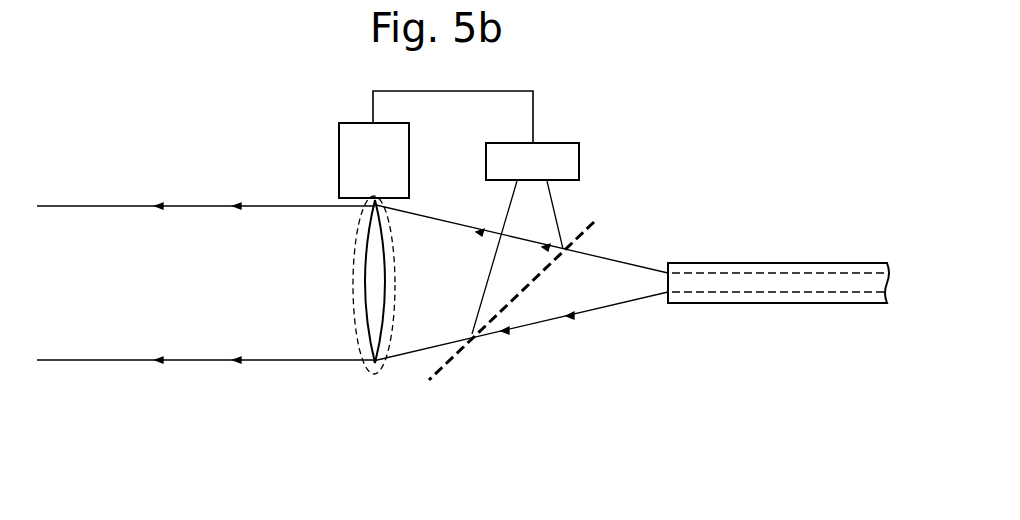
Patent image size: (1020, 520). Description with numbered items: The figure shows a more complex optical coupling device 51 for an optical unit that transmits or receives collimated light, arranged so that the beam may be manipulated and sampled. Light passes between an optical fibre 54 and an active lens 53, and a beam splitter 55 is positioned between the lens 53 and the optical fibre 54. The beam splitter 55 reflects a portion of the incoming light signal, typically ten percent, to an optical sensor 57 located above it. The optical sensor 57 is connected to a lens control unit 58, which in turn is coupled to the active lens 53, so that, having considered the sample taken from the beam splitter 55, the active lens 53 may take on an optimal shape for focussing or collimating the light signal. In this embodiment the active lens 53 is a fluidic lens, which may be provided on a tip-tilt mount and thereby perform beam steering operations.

The optical coupling device 51 is at (668, 168).
The active lens 53 is at (375, 273).
The optical fibre 54 is at (767, 297).
The beam splitter 55 is at (460, 350).
The optical sensor 57 is at (555, 158).
The lens control unit 58 is at (358, 158).